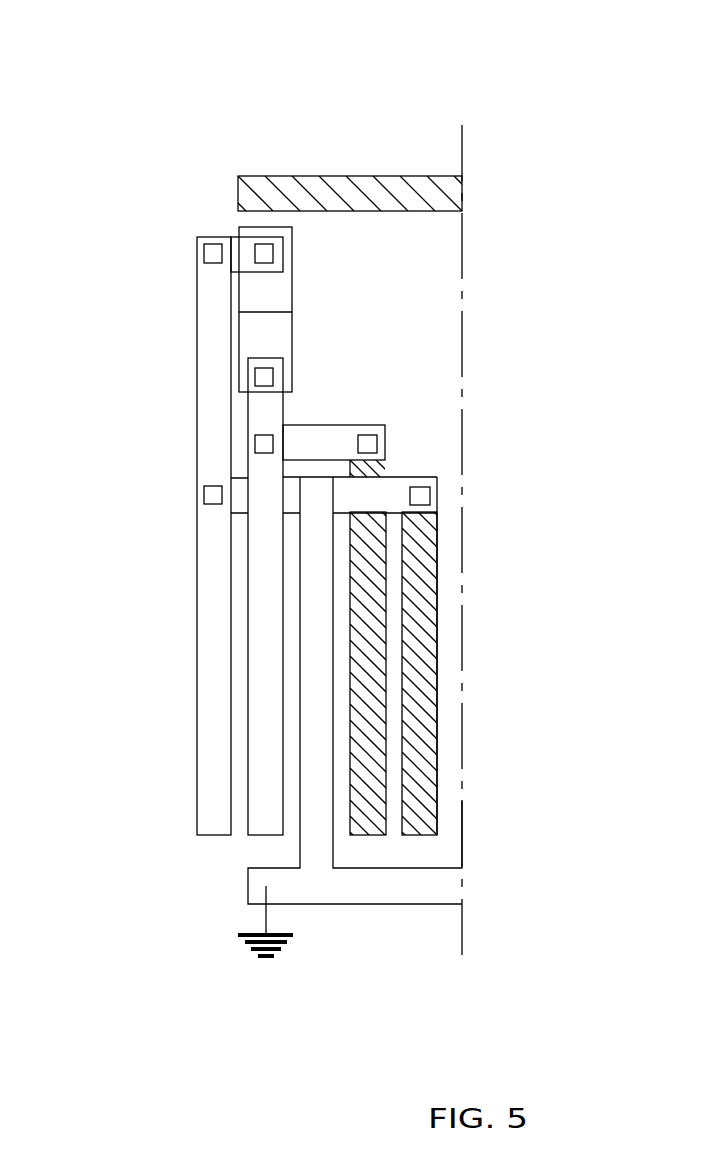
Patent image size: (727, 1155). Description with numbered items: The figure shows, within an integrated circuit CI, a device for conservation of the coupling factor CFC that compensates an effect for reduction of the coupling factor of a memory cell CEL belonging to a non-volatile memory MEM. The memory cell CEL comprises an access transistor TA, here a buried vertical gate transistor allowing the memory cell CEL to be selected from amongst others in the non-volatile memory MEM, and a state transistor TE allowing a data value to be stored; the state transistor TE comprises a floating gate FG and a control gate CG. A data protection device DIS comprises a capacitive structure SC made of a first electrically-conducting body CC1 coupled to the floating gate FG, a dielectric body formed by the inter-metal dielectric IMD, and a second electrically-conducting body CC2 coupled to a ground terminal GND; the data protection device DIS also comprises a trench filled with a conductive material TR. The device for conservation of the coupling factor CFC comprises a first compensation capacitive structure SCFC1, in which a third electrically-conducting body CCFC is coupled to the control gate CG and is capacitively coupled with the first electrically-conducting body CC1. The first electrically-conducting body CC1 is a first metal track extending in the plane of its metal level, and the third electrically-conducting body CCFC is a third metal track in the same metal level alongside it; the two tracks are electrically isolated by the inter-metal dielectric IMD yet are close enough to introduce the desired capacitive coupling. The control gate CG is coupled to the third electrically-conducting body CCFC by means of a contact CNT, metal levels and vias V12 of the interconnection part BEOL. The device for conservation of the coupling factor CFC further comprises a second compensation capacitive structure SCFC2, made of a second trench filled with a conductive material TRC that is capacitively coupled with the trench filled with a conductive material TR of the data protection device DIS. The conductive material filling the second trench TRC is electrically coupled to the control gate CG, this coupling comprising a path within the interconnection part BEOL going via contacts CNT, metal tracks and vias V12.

The integrated circuit CI is at (566, 80).
The non-volatile memory MEM is at (498, 182).
The memory cell CEL is at (290, 162).
The access transistor TA is at (262, 186).
The state transistor TE is at (300, 309).
The control gate CG is at (263, 298).
The floating gate FG is at (263, 338).
The contact CNT is at (262, 252).
The vias V12 is at (210, 254).
The device for conservation of the coupling factor CFC is at (192, 451).
The third electrically-conducting body CCFC is at (208, 634).
The first electrically-conducting body CC1 is at (263, 582).
The second electrically-conducting body CC2 is at (315, 700).
The first compensation capacitive structure SCFC1 is at (238, 742).
The second compensation capacitive structure SCFC2 is at (398, 598).
The capacitive structure SC is at (285, 823).
The inter-metal dielectric IMD is at (290, 482).
The trench filled with a conductive material TR is at (367, 658).
The second trench filled with a conductive material TRC is at (413, 717).
The data protection device DIS is at (490, 837).
The ground terminal GND is at (245, 948).
The interconnection part BEOL is at (548, 947).